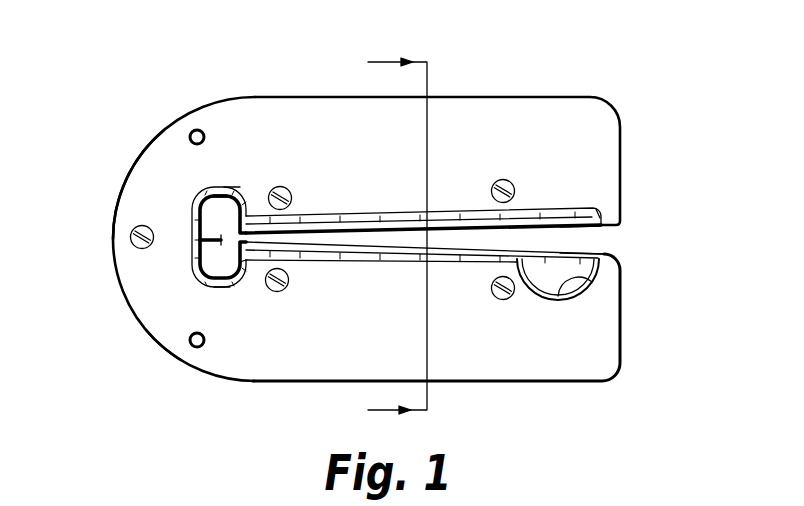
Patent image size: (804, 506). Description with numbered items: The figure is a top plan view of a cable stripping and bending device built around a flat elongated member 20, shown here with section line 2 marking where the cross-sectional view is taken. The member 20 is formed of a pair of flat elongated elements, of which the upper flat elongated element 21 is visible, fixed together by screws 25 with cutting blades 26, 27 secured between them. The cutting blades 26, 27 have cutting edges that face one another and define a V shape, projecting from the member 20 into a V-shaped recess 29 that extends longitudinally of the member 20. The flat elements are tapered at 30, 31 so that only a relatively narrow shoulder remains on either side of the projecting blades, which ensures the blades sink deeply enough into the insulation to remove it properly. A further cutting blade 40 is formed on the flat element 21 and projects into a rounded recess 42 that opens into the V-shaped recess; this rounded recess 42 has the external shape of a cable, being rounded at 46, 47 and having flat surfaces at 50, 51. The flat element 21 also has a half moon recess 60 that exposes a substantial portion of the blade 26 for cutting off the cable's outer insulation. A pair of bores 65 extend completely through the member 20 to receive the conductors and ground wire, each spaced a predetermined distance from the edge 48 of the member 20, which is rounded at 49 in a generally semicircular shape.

The section line 2- 2 is at (382, 236).
The flat elongated member 20 is at (420, 199).
The flat elongated element 21 is at (626, 84).
The screws 25 is at (143, 226).
The cutting blade 26 is at (600, 254).
The cutting blade 27 is at (567, 236).
The V-shaped recess 29 is at (572, 207).
The taper 30 is at (453, 237).
The taper 31 is at (387, 258).
The cutting blade 40 is at (200, 277).
The rounded recess 42 is at (219, 207).
The rounded portion 46 is at (230, 285).
The rounded portion 47 is at (228, 188).
The edge 48 is at (143, 152).
The rounded portion 49 is at (128, 176).
The flat surface 50 is at (197, 238).
The flat surface 51 is at (246, 263).
The half moon recess 60 is at (590, 283).
The bores 65 is at (189, 132).